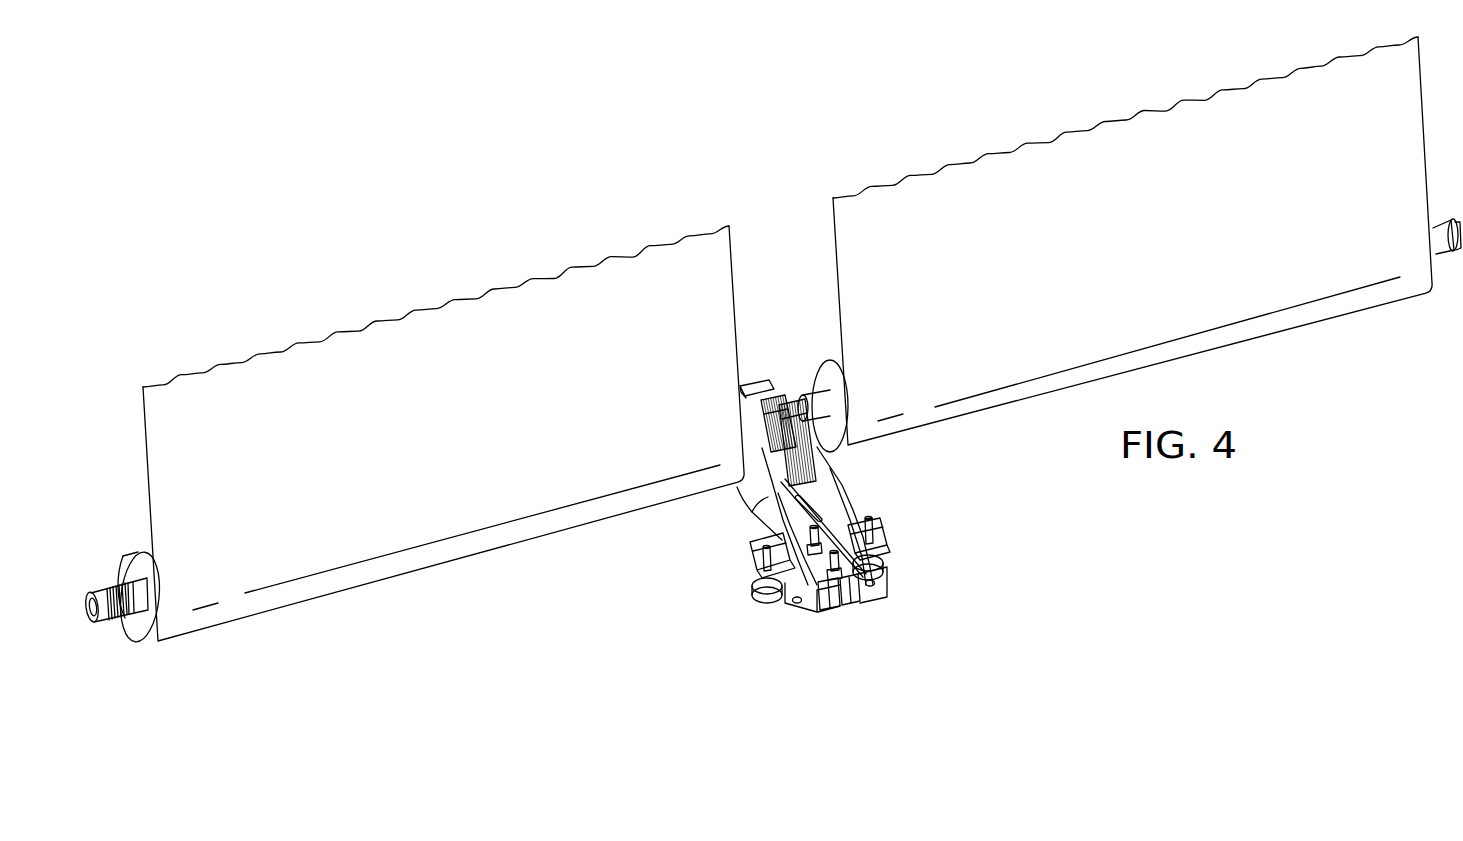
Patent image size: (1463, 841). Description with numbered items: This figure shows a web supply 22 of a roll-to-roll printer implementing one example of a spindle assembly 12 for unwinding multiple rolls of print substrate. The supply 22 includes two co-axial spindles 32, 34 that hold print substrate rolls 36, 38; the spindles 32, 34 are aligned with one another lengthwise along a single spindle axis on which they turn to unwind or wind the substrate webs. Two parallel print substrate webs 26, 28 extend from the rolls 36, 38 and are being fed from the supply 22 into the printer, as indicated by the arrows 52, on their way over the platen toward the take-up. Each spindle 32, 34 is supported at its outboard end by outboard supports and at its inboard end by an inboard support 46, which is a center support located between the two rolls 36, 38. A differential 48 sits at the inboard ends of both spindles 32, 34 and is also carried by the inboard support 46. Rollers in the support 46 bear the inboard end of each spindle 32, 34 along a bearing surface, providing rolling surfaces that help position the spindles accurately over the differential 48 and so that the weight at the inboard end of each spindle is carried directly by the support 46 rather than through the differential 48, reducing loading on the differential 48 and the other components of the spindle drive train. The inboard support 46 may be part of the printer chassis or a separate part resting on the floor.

The spindle assembly 12 is at (605, 617).
The supply 22 is at (402, 650).
The print substrate web 26 is at (460, 300).
The print substrate web 28 is at (1147, 110).
The spindle 32 is at (1440, 243).
The spindle 34 is at (136, 600).
The print substrate roll 36 is at (130, 570).
The print substrate roll 38 is at (818, 373).
The inboard support 46 is at (760, 497).
The differential 48 is at (817, 489).
The arrows 52 is at (1442, 107).